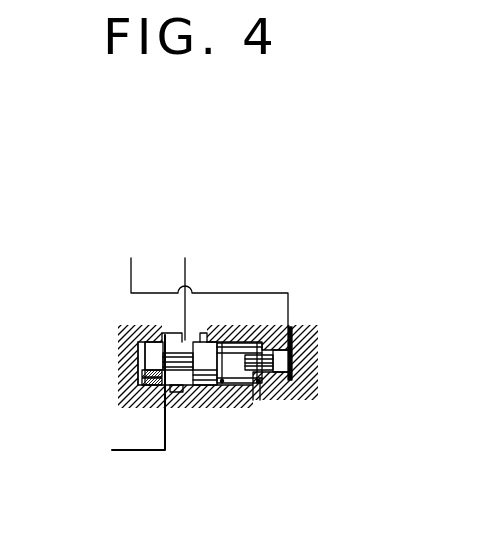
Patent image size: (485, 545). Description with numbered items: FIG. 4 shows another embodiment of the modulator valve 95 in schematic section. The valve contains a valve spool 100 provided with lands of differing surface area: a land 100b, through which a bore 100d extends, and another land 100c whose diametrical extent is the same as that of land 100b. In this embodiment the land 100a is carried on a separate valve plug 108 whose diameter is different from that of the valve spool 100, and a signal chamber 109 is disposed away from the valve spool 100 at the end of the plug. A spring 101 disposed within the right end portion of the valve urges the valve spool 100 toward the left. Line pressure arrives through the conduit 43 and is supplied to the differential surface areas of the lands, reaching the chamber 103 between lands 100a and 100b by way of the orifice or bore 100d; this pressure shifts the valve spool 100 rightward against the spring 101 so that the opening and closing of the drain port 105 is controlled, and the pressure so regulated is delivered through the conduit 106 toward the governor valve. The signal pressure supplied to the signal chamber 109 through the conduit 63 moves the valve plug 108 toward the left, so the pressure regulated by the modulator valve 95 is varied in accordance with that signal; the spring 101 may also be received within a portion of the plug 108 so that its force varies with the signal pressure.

The conduit 43 is at (130, 453).
The conduit 63 is at (131, 272).
The modulator valve 95 is at (318, 325).
The valve spool 100 is at (176, 364).
The land 100a is at (292, 358).
The land 100b is at (150, 350).
The land 100c is at (208, 357).
The bore 100d is at (150, 392).
The spring 101 is at (244, 384).
The chamber 103 is at (138, 350).
The drain port 105 is at (200, 390).
The conduit 106 is at (186, 266).
The valve plug 108 is at (265, 360).
The signal chamber 109 is at (293, 380).